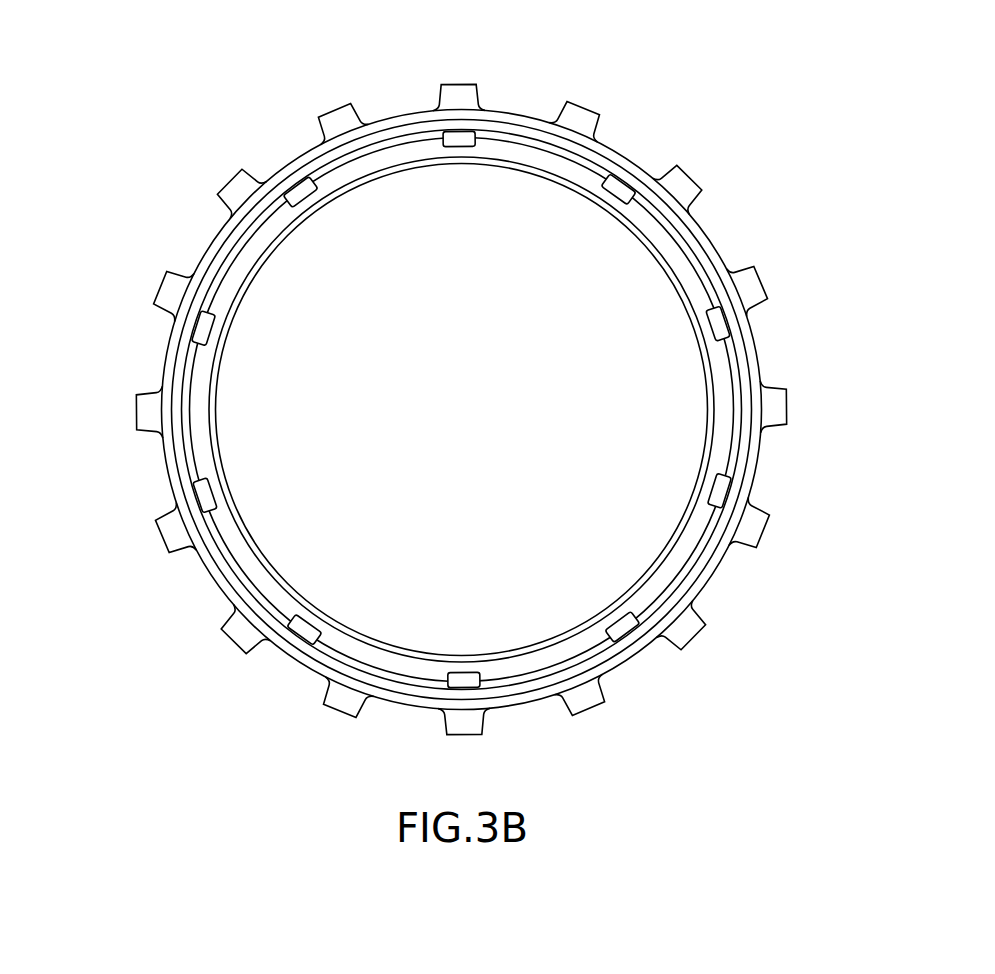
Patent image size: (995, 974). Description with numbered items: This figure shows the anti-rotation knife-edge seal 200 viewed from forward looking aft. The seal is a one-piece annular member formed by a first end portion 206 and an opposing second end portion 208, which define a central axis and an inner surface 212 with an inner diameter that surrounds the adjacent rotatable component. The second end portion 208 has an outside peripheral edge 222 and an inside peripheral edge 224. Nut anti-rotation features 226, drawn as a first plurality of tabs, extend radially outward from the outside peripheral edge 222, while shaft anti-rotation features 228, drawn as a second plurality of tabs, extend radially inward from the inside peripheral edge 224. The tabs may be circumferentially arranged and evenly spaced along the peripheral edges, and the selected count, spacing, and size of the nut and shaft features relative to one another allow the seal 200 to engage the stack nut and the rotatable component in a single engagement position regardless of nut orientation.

The anti-rotation knife-edge seal 200 is at (727, 110).
The first end portion 206 is at (762, 468).
The second end portion 208 is at (210, 242).
The inner surface 212 is at (272, 568).
The outside peripheral edge 222 is at (515, 125).
The inside peripheral edge 224 is at (732, 412).
The nut anti-rotation features 226 is at (460, 85).
The shaft anti-rotation features 228 is at (459, 148).